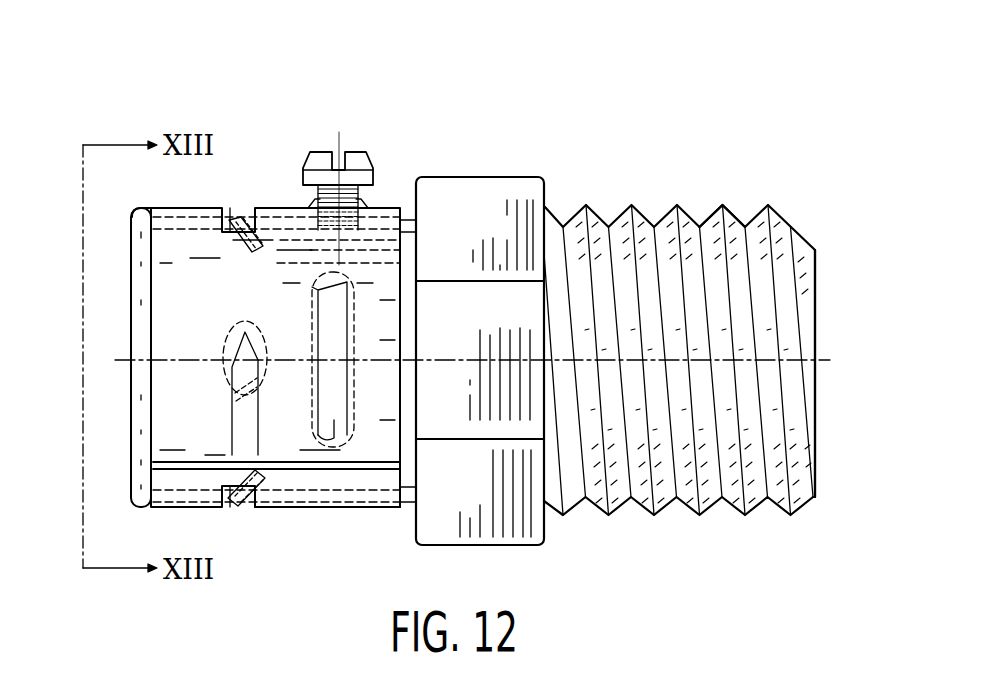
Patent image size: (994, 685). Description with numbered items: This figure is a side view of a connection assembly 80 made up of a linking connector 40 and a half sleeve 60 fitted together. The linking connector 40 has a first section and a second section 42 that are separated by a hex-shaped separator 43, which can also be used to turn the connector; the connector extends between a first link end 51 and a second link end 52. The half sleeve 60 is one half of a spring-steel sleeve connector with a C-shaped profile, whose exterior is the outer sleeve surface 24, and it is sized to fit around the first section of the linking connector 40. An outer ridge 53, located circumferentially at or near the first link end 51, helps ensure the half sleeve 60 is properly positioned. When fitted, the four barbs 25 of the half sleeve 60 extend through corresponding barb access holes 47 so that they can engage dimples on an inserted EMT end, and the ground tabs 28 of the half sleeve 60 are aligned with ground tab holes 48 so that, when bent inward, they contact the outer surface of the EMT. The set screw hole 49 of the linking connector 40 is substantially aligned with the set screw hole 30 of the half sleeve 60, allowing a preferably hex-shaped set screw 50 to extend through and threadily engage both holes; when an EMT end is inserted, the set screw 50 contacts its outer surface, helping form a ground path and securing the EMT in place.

The connection assembly 80 is at (143, 73).
The outer sleeve surface 24 is at (183, 262).
The barbs 25 is at (233, 372).
The ground tabs 28 is at (330, 430).
The set screw hole 30 is at (380, 206).
The linking connector 40 is at (551, 212).
The second section 42 is at (723, 207).
The hex-shaped separator 43 is at (472, 197).
The barb access holes 47 is at (227, 327).
The ground tab holes 48 is at (316, 277).
The set screw hole 49 is at (320, 235).
The set screw 50 is at (320, 157).
The first link end 51 is at (129, 307).
The second link end 52 is at (817, 283).
The outer ridge 53 is at (141, 210).
The half sleeve 60 is at (300, 510).